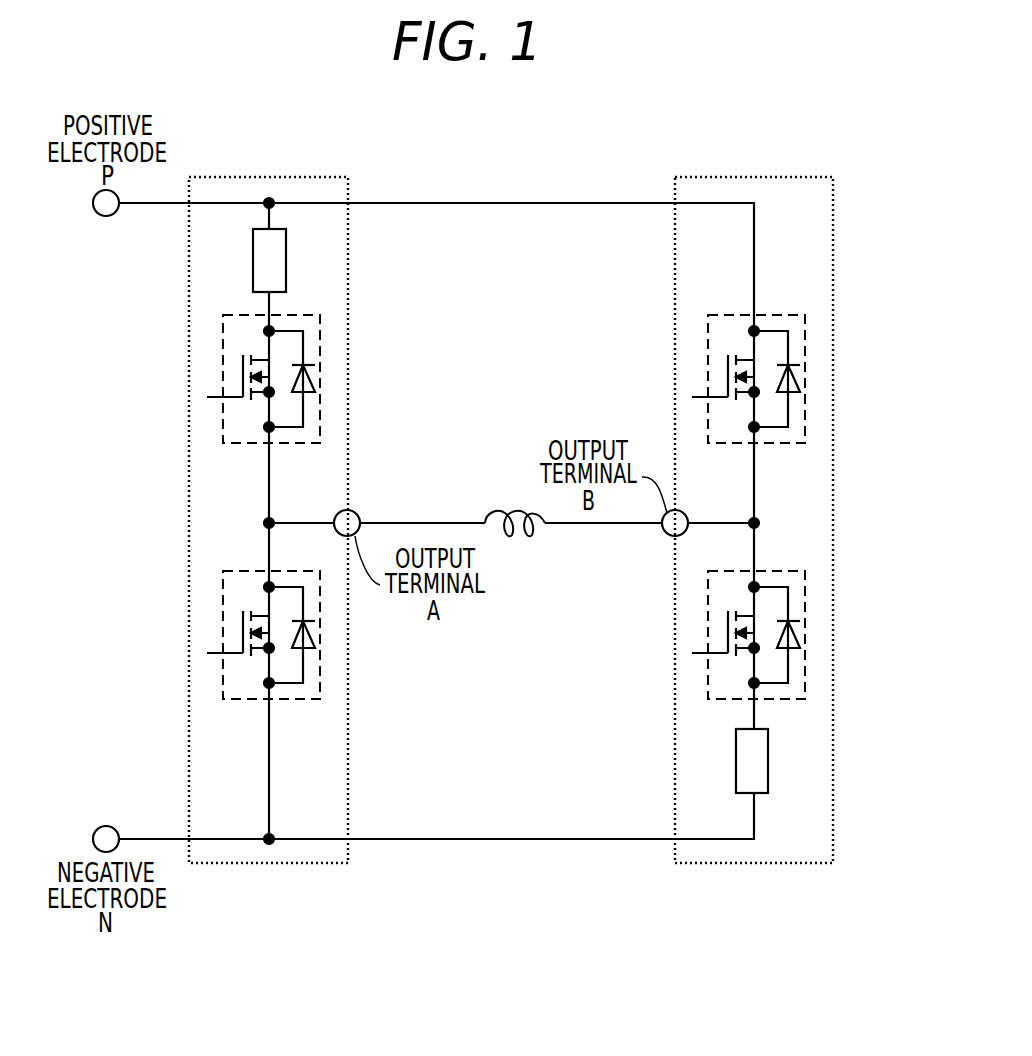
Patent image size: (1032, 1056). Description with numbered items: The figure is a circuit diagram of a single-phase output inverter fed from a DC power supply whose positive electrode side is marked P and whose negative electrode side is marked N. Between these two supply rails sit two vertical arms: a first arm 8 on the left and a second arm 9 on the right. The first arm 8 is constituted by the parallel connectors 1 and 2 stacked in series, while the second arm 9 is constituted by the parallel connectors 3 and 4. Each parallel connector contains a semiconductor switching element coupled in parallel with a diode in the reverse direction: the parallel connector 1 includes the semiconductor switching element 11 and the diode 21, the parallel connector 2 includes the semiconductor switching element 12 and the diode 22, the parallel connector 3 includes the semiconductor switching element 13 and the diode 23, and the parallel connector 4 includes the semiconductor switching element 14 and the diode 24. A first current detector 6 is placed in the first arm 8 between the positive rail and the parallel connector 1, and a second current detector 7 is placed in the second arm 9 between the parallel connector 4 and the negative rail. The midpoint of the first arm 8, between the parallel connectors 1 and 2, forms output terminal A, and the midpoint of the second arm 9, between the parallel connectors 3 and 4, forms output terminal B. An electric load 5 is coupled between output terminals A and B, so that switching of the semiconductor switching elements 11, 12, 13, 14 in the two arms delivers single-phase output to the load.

The parallel connector 1 is at (251, 377).
The parallel connector 2 is at (260, 635).
The parallel connector 3 is at (739, 379).
The parallel connector 4 is at (739, 635).
The electric load 5 is at (497, 513).
The first current detector 6 is at (286, 274).
The second current detector 7 is at (768, 765).
The first arm 8 is at (297, 178).
The second arm 9 is at (706, 177).
The semiconductor switching element 11 is at (241, 370).
The semiconductor switching element 12 is at (241, 627).
The semiconductor switching element 13 is at (726, 368).
The semiconductor switching element 14 is at (726, 630).
The diode 21 is at (312, 373).
The diode 22 is at (315, 635).
The diode 23 is at (797, 372).
The diode 24 is at (797, 632).